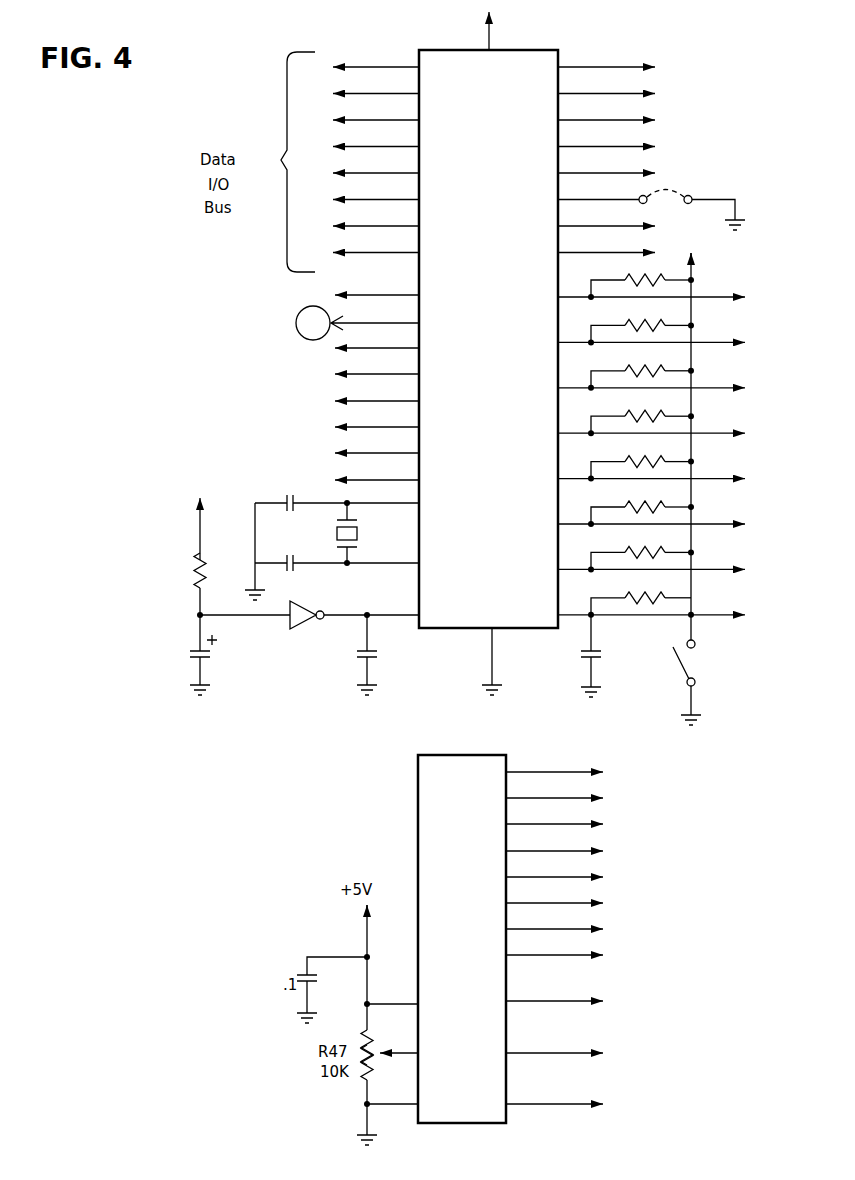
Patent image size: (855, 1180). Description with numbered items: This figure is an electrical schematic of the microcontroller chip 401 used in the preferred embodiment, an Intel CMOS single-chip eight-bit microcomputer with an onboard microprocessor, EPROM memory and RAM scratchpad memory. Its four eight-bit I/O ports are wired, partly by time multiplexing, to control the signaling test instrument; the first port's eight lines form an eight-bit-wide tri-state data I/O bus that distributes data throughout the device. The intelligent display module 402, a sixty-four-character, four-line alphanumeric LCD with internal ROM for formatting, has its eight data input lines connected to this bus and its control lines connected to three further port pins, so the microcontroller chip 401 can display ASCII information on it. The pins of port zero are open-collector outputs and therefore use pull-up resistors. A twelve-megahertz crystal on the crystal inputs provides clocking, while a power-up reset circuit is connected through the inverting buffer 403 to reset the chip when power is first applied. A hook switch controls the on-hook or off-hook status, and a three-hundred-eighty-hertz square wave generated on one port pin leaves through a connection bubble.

The microcontroller chip 401 is at (433, 48).
The intelligent display module 402 is at (418, 812).
The inverting buffer 403 is at (306, 630).